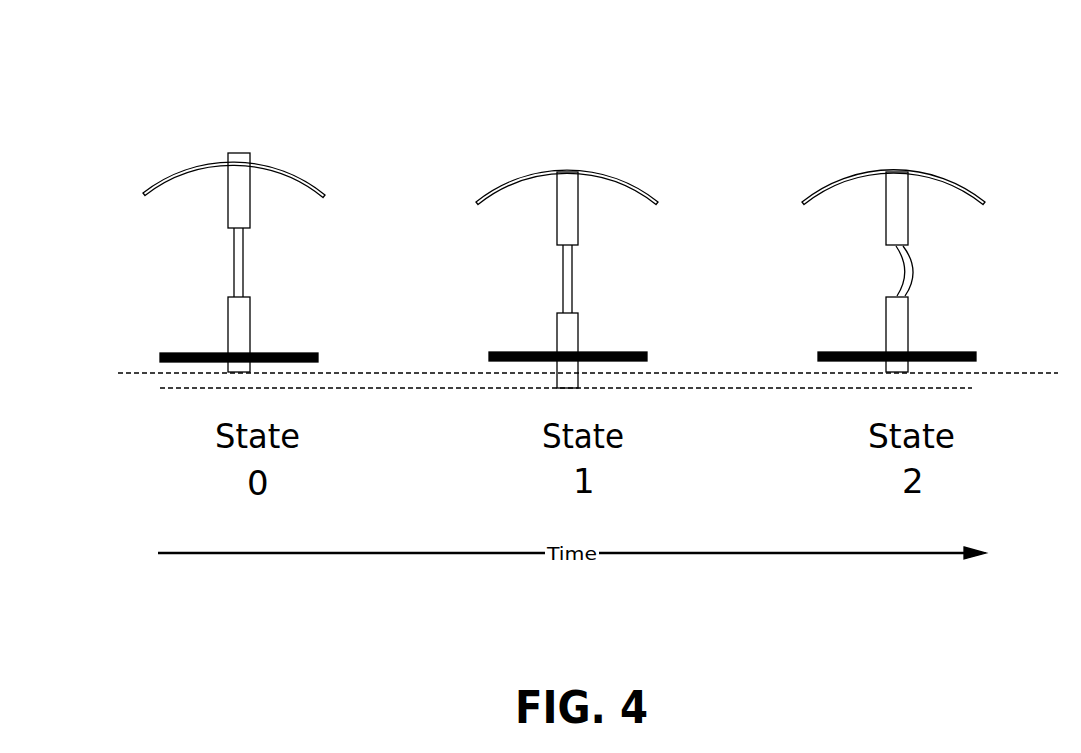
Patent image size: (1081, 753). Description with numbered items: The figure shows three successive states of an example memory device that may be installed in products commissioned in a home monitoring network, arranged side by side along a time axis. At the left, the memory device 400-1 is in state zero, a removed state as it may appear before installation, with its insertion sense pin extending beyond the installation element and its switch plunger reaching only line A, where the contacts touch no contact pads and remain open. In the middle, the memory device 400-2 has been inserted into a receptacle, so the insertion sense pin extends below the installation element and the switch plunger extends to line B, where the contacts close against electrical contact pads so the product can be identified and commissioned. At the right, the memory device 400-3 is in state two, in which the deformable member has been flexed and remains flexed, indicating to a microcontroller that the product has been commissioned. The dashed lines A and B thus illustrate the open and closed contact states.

The memory device 400-1 is at (269, 189).
The memory device 400-2 is at (598, 224).
The memory device 400-3 is at (926, 216).
The line A is at (125, 368).
The line B is at (160, 388).